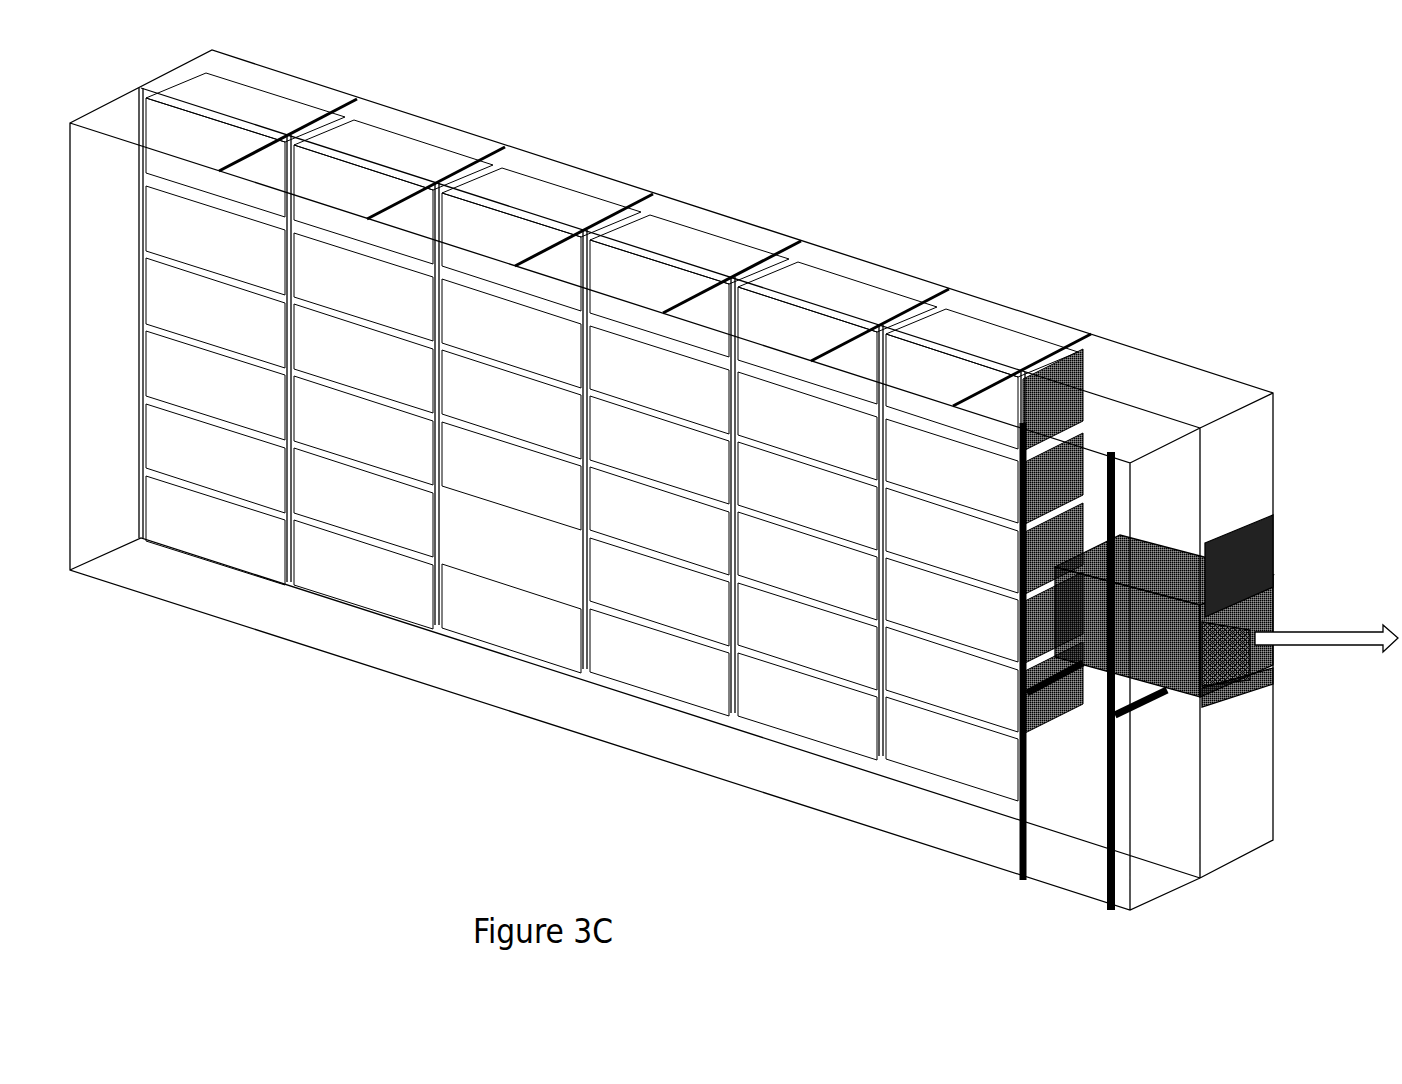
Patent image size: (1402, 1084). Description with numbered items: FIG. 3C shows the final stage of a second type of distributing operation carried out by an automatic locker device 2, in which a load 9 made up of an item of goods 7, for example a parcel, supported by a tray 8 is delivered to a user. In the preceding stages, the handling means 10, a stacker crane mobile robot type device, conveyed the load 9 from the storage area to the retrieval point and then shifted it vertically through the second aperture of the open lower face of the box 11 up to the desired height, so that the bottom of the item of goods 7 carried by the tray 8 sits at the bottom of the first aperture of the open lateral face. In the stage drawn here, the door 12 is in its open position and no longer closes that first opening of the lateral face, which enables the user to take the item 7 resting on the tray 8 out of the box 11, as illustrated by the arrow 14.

The storage container with shelving 2 is at (643, 177).
The item of goods 7 is at (1225, 666).
The tray 8 is at (1222, 697).
The load 9 is at (1298, 678).
The handling means 10 is at (1115, 882).
The box 11 is at (1163, 563).
The door 12 is at (1258, 560).
The arrow 14 is at (1323, 632).